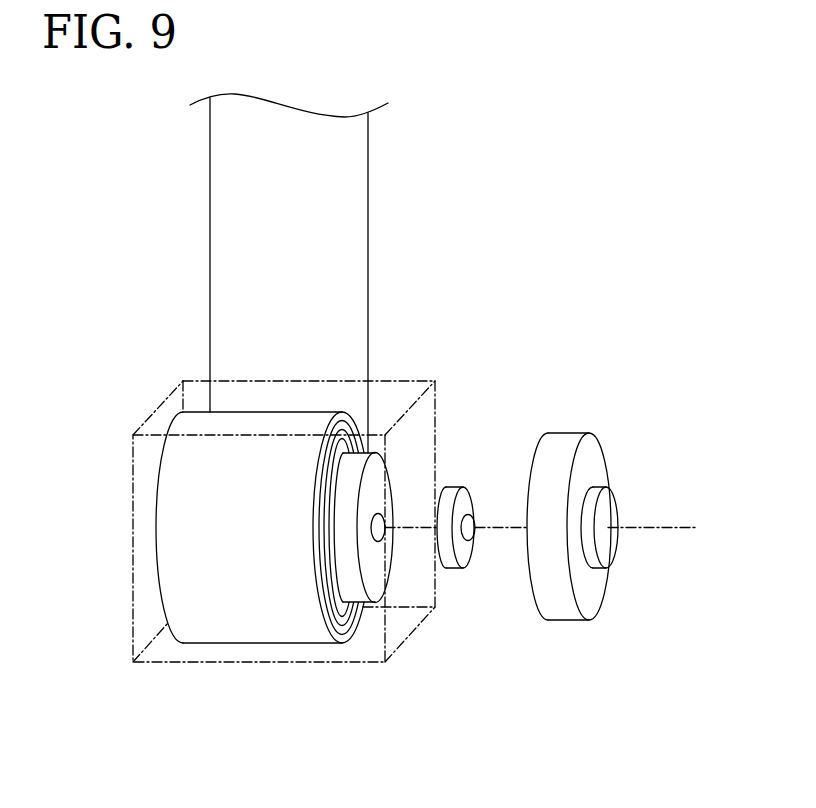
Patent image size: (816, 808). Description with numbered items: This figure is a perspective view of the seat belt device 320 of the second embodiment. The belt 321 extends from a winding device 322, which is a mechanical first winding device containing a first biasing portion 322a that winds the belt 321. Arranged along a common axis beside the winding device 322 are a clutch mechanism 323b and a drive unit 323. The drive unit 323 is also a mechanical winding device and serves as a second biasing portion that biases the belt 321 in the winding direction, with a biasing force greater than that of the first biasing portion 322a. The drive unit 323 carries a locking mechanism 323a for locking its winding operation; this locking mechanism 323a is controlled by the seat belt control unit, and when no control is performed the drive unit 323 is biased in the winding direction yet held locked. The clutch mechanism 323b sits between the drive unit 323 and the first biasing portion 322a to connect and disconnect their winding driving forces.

The seat belt device 320 is at (426, 434).
The belt 321 is at (356, 276).
The winding device 322 is at (435, 408).
The first biasing portion 322a is at (380, 472).
The drive unit 323 is at (595, 453).
The locking mechanism 323a is at (610, 513).
The clutch mechanism 323b is at (465, 556).